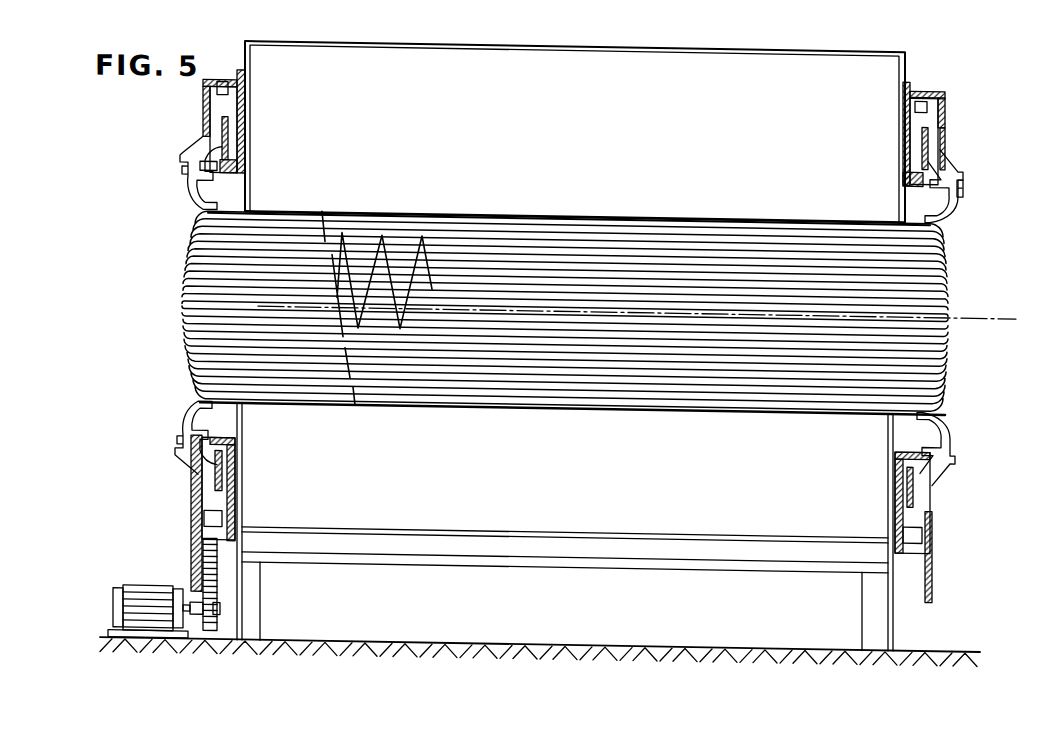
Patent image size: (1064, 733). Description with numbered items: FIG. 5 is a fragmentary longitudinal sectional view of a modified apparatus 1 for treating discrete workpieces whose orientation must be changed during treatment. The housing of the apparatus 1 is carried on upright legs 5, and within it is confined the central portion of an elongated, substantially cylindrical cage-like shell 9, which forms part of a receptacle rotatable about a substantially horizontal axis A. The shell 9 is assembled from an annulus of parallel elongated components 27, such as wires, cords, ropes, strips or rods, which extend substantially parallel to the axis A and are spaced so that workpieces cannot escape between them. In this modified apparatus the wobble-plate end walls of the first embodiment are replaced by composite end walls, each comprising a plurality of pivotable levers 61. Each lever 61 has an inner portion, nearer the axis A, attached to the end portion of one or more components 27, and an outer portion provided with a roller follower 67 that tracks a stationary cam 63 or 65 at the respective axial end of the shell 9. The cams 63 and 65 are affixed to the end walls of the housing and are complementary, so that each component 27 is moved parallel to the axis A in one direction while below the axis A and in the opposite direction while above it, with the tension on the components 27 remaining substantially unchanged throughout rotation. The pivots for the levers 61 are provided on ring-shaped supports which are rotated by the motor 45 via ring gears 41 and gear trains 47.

The apparatus 1 is at (563, 149).
The legs 5 is at (256, 588).
The cage-like shell 9 is at (660, 340).
The elongated components 27 is at (546, 397).
The ring gears 41 is at (935, 505).
The motor 45 is at (140, 595).
The gear trains 47 is at (191, 548).
The pivotable levers 61 is at (192, 193).
The stationary cam 63 is at (927, 167).
The stationary cam 65 is at (203, 153).
The roller follower 67 is at (963, 169).
The axis A is at (972, 306).